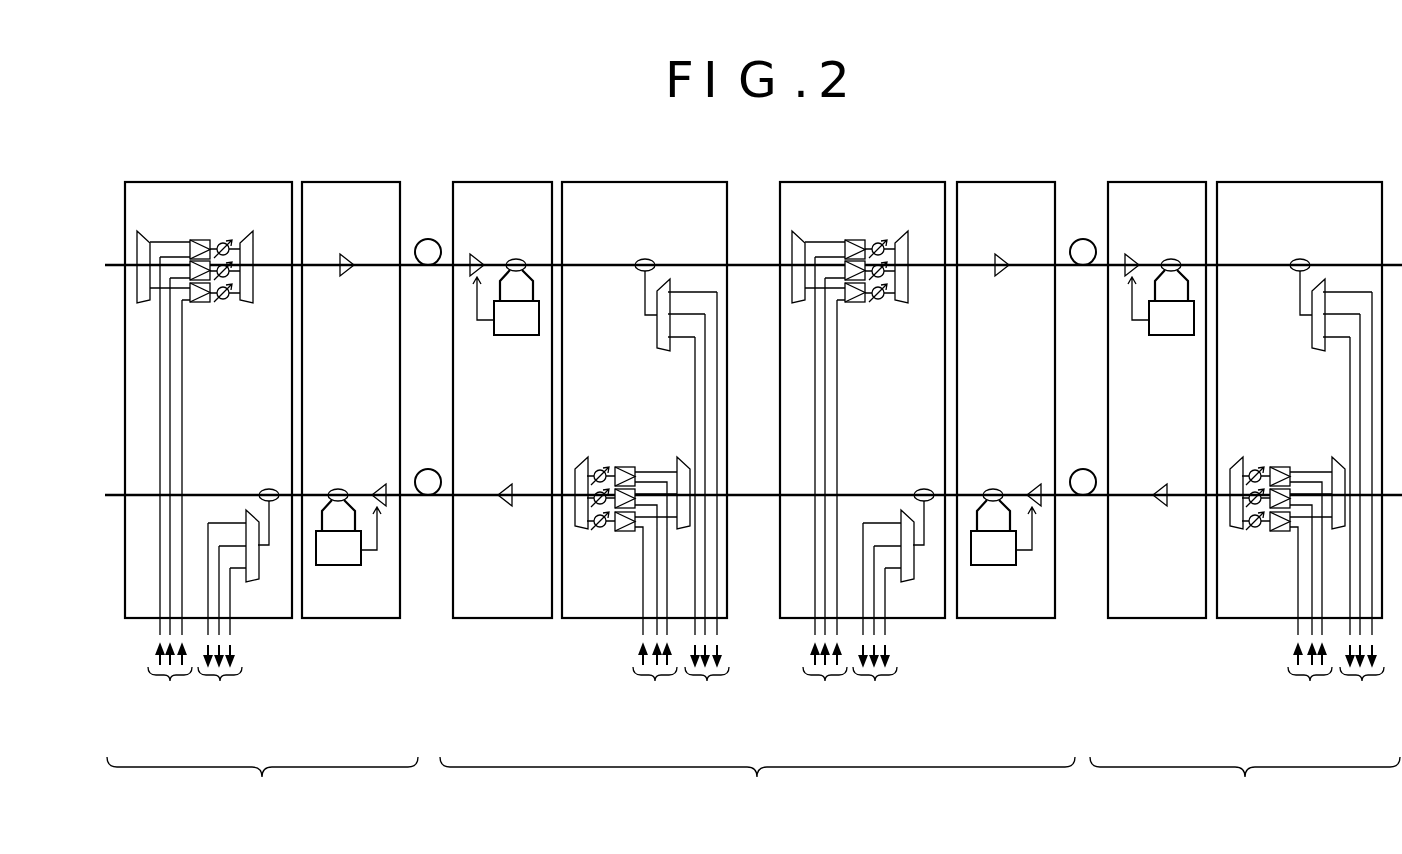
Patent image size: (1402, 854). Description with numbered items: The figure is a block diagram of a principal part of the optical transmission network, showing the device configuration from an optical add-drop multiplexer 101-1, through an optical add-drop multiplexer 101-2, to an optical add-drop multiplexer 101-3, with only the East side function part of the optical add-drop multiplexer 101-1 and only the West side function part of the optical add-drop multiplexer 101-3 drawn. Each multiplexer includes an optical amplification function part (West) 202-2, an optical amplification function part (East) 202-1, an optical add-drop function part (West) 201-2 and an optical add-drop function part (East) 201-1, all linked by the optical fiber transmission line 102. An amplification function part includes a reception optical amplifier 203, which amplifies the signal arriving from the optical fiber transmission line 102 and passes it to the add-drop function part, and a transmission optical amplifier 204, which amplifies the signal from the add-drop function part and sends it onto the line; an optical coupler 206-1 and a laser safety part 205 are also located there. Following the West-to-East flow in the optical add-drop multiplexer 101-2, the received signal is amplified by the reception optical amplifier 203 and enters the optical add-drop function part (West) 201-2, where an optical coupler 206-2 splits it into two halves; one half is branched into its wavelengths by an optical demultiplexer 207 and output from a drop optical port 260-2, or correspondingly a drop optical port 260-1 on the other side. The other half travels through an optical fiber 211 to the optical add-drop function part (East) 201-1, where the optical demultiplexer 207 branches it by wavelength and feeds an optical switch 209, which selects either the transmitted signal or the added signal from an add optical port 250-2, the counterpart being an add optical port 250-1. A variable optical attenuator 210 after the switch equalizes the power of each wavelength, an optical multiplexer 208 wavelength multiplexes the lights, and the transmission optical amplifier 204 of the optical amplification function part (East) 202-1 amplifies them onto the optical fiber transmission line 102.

The optical add-drop multiplexer 101-1 is at (262, 784).
The optical add-drop multiplexer 101-2 is at (757, 784).
The optical add-drop multiplexer 101-3 is at (1245, 784).
The optical fiber transmission line 102 is at (759, 342).
The optical add-drop function part (East) 201-1 is at (205, 181).
The optical add-drop function part (West) 201-2 is at (644, 181).
The optical amplification function part (East) 202-1 is at (349, 181).
The optical amplification function part (West) 202-2 is at (501, 181).
The reception optical amplifier 203 is at (755, 359).
The transmission optical amplifier 204 is at (758, 401).
The laser safety part 205 is at (756, 441).
The optical coupler 206-1 is at (759, 345).
The optical coupler 206-2 is at (777, 356).
The optical demultiplexer 207 is at (754, 385).
The optical multiplexer 208 is at (755, 359).
The optical switch 209 is at (747, 385).
The variable optical attenuator 210 is at (746, 407).
The optical fiber 211 is at (752, 261).
The add optical port 250-1 is at (972, 606).
The add optical port 250-2 is at (486, 495).
The drop optical port 260-1 is at (1043, 523).
The drop optical port 260-2 is at (563, 641).